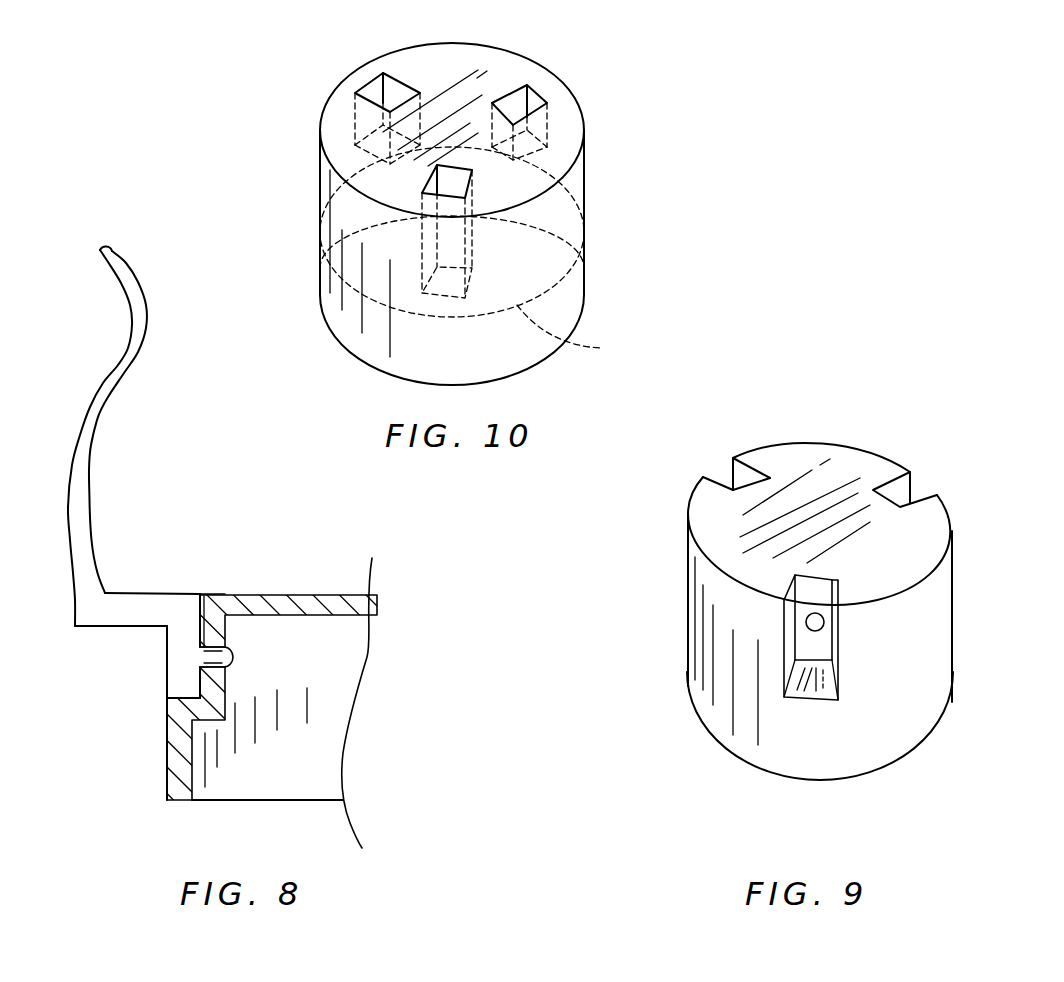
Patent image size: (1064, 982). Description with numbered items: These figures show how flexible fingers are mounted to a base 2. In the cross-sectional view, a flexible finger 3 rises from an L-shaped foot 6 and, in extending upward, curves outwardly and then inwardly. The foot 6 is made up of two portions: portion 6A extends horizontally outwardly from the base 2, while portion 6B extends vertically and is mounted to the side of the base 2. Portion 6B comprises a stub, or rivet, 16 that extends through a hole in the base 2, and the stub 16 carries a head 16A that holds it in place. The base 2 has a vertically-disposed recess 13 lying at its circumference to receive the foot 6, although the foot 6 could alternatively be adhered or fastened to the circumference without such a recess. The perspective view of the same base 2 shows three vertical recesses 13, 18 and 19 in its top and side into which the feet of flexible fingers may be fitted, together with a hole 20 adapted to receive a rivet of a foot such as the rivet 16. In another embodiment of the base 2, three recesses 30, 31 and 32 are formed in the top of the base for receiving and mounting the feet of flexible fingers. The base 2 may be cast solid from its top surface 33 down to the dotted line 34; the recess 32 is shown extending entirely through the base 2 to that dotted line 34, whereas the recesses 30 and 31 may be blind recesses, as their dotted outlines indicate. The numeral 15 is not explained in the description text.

In FIG. 10, the base 2 is at (291, 172).
In FIG. 9, the base 2 is at (657, 595).
In FIG. 8, the base 2 is at (288, 703).
In FIG. 8, the flexible finger 3 is at (77, 495).
In FIG. 8, the L-shaped foot 6 is at (138, 696).
In FIG. 8, the horizontal portion of foot 6A is at (160, 623).
In FIG. 8, the vertical portion of foot 6B is at (185, 697).
In FIG. 9, the vertically-disposed recess 13 is at (823, 655).
In FIG. 8, the vertically-disposed recess 13 is at (221, 598).
In FIG. 8, the wall of container body 15 is at (226, 697).
In FIG. 8, the stub or rivet 16 is at (259, 652).
In FIG. 8, the head of stub 16A is at (233, 652).
In FIG. 9, the vertical recess 18 is at (723, 472).
In FIG. 9, the vertical recess 19 is at (920, 487).
In FIG. 9, the hole 20 is at (815, 613).
In FIG. 10, the recess 30 is at (377, 92).
In FIG. 10, the recess 31 is at (512, 107).
In FIG. 10, the recess 32 is at (452, 182).
In FIG. 10, the top surface 33 is at (456, 81).
In FIG. 10, the dotted line 34 is at (600, 348).